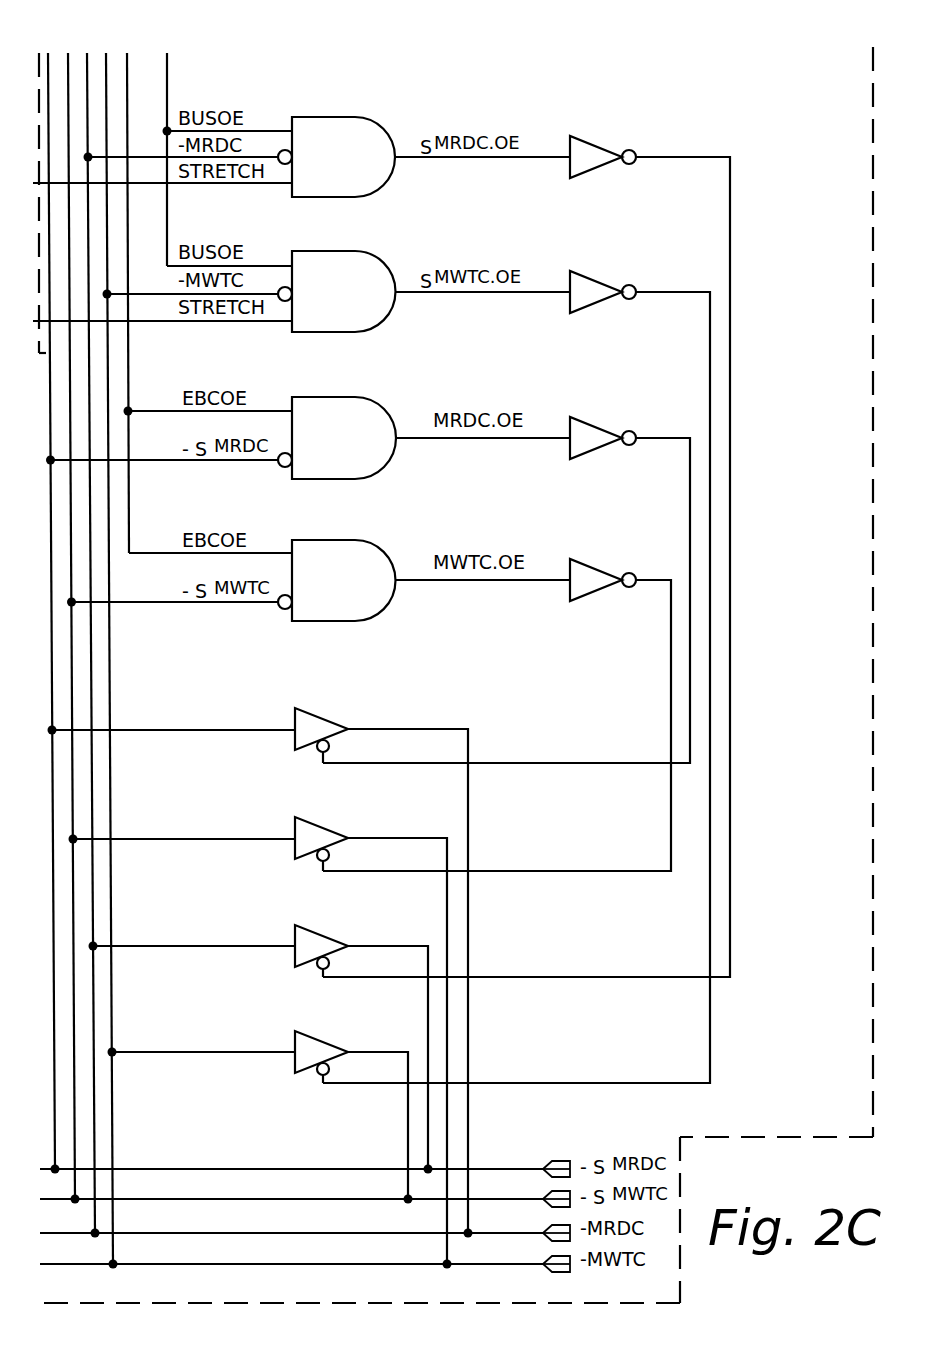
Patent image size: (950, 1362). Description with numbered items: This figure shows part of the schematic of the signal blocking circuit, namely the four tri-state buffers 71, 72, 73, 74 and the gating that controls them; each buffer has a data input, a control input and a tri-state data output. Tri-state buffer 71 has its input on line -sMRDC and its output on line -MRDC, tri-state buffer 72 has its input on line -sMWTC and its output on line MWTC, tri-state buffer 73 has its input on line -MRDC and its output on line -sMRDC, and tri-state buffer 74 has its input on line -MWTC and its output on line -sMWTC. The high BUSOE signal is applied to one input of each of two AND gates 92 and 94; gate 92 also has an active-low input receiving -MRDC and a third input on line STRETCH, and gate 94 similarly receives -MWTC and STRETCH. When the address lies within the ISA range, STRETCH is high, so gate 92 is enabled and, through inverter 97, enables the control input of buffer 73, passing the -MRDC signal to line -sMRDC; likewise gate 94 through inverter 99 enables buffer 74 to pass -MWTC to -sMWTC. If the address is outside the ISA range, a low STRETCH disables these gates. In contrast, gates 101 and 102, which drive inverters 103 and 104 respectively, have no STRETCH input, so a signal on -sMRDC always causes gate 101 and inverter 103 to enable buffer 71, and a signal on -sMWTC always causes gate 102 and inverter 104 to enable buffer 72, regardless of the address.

The AND gate 92 is at (374, 118).
The AND gate 94 is at (374, 252).
The gate 101 is at (374, 398).
The gate 102 is at (374, 541).
The inverter 97 is at (592, 137).
The inverter 99 is at (592, 272).
The inverter 103 is at (592, 418).
The inverter 104 is at (592, 560).
The tri-state buffer 71 is at (318, 708).
The tri-state buffer 72 is at (318, 817).
The tri-state buffer 73 is at (318, 925).
The tri-state buffer 74 is at (318, 1031).